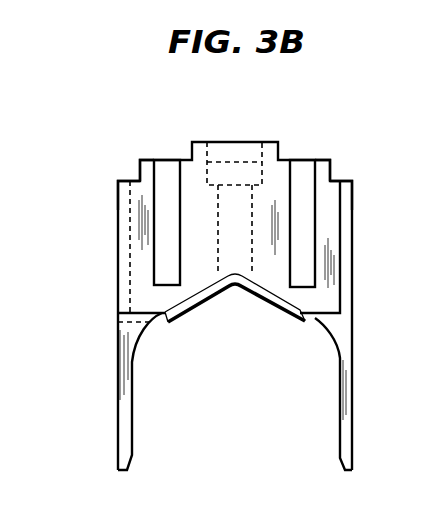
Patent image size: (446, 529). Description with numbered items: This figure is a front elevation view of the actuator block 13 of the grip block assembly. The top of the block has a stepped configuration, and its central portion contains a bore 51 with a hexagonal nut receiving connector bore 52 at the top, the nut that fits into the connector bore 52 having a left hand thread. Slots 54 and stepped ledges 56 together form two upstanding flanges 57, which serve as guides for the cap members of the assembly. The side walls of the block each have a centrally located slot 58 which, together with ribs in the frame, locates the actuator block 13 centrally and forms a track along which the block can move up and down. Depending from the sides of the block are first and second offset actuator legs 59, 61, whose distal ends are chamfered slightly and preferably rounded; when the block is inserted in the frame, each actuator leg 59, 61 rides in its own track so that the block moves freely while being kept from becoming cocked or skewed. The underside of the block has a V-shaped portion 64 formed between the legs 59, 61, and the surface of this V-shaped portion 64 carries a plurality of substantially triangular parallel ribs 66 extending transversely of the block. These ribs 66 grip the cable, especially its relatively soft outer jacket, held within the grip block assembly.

The actuator block 13 is at (104, 255).
The bore 51 is at (250, 223).
The connector bore 52 is at (262, 151).
The slots 54 is at (158, 177).
The stepped ledges 56 is at (122, 181).
The upstanding flanges 57 is at (137, 166).
The slots 58 is at (122, 203).
The first offset actuator leg 59 is at (354, 393).
The second offset actuator leg 61 is at (118, 386).
The V-shaped portion 64 is at (288, 312).
The ribs 66 is at (258, 292).